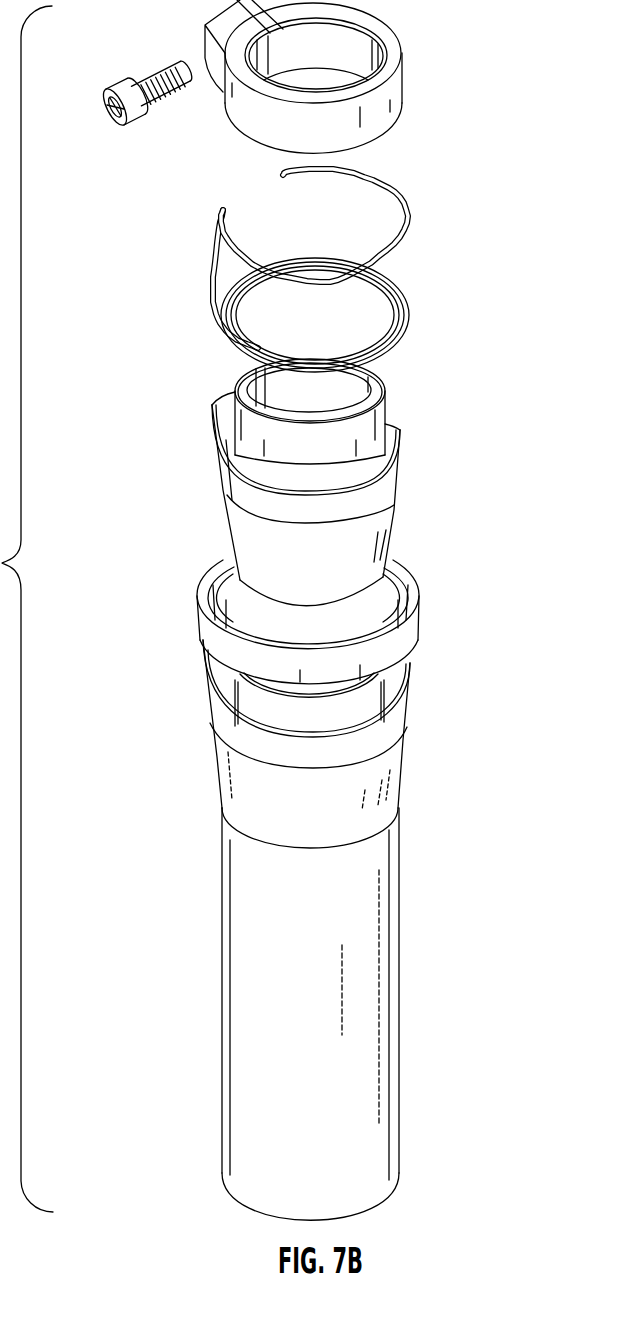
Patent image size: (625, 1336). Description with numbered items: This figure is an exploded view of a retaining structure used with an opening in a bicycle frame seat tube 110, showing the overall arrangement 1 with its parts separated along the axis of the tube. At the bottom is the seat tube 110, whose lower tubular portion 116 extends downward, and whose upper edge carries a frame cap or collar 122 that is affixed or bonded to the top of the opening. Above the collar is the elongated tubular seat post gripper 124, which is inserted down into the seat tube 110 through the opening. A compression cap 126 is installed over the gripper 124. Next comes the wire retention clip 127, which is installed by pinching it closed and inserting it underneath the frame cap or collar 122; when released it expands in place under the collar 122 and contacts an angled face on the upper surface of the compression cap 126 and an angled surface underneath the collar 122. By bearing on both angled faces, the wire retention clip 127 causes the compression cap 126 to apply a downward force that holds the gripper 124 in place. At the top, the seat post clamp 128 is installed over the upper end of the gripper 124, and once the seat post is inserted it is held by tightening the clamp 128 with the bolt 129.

The seatpost assembly 1 is at (432, 668).
The bicycle frame (seat tube) 110 is at (212, 762).
The tube 116 is at (363, 1033).
The frame cap or collar 122 is at (197, 615).
The elongated tubular seat post gripper 124 is at (222, 485).
The compression cap 126 is at (217, 335).
The wire retention clip 127 is at (213, 233).
The seat post clamp 128 is at (228, 125).
The bolt 129 is at (103, 126).